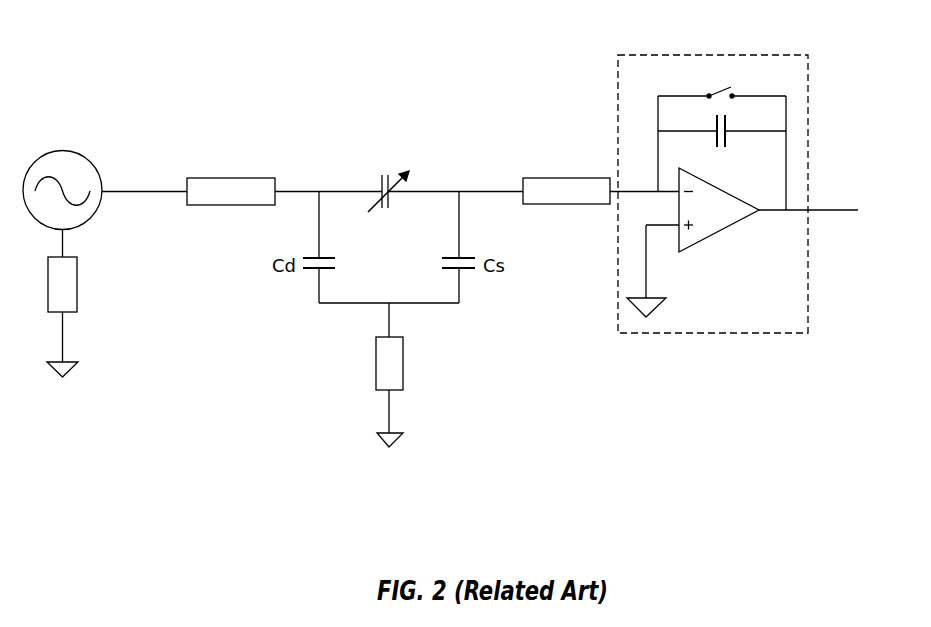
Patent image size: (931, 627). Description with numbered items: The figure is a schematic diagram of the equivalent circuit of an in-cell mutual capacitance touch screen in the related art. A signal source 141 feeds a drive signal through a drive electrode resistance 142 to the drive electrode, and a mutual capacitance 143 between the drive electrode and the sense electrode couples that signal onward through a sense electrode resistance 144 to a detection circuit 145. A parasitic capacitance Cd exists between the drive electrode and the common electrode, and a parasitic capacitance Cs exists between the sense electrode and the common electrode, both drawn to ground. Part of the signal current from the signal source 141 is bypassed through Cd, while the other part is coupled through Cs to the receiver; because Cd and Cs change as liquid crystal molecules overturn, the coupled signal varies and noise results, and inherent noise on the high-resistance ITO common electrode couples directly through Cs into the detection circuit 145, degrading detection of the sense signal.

The signal source 141 is at (86, 164).
The drive electrode resistance 142 is at (248, 183).
The mutual capacitance 143 is at (380, 173).
The sense electrode resistance 144 is at (547, 183).
The detection circuit 145 is at (773, 67).